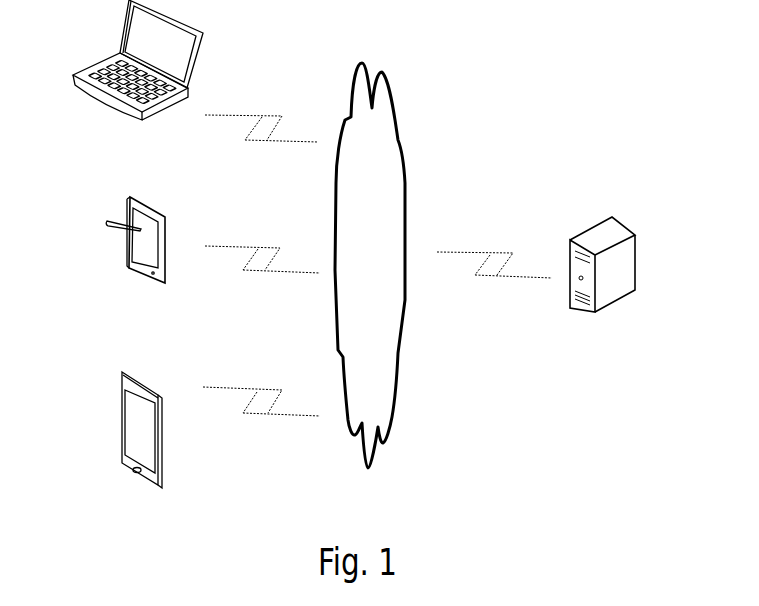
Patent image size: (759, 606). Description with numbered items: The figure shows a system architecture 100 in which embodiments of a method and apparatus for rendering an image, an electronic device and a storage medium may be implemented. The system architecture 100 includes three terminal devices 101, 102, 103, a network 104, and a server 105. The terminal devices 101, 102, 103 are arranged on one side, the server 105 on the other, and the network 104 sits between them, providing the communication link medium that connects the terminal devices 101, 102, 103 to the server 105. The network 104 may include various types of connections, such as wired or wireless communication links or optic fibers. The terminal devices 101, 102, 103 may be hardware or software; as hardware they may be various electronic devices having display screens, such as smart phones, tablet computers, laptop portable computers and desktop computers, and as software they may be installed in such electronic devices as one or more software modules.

The system architecture 100 is at (627, 45).
The terminal device 101 is at (142, 451).
The terminal device 102 is at (135, 259).
The terminal device 103 is at (138, 81).
The network 104 is at (370, 265).
The server 105 is at (602, 288).